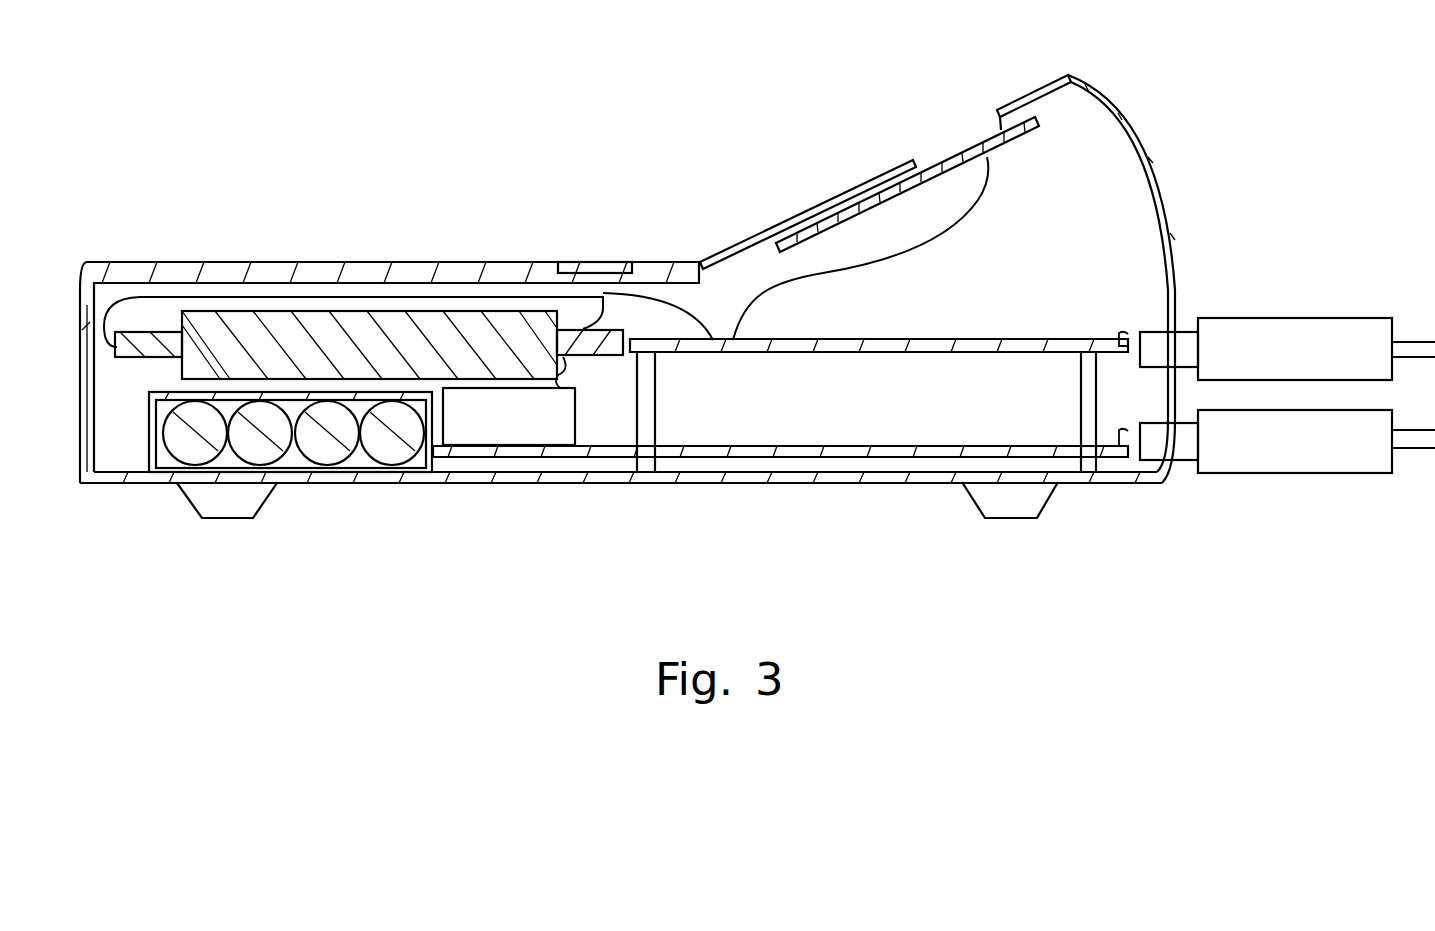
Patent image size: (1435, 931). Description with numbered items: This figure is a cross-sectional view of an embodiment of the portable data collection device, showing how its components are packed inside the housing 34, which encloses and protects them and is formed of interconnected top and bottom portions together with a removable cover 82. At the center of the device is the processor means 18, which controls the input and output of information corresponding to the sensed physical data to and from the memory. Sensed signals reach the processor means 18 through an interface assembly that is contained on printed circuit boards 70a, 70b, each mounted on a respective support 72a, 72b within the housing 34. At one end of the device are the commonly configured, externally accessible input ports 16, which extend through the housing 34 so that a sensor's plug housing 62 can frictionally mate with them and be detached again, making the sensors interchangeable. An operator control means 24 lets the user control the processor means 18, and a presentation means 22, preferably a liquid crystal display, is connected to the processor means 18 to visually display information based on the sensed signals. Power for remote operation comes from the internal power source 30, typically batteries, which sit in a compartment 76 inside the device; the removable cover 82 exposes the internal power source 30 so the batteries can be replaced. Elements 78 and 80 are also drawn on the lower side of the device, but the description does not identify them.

The input ports 16 is at (1160, 478).
The processor means 18 is at (400, 311).
The presentation means 22 is at (950, 156).
The operator control means 24 is at (596, 260).
The internal power source 30 is at (327, 465).
The housing 34 is at (1170, 168).
The plug housing 62 is at (1290, 318).
The printed circuit board 70a is at (823, 353).
The printed circuit board 70b is at (950, 447).
The support 72a is at (655, 372).
The support 72b is at (1097, 372).
The compartment 76 is at (172, 470).
The foot 78 is at (1000, 519).
The housing bottom 80 is at (715, 482).
The removable cover 82 is at (388, 483).